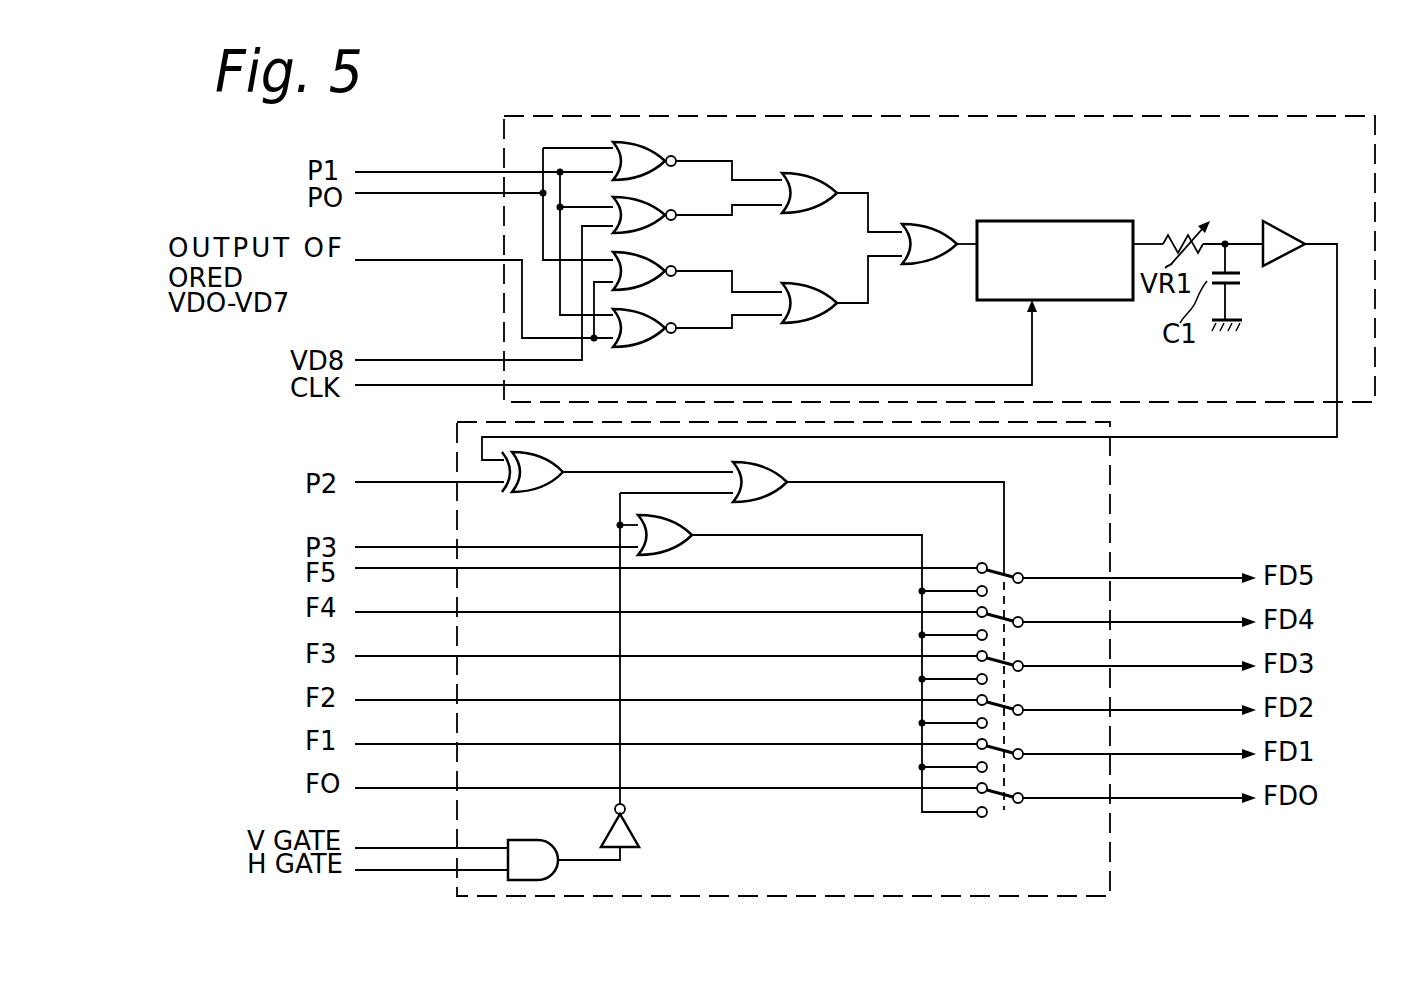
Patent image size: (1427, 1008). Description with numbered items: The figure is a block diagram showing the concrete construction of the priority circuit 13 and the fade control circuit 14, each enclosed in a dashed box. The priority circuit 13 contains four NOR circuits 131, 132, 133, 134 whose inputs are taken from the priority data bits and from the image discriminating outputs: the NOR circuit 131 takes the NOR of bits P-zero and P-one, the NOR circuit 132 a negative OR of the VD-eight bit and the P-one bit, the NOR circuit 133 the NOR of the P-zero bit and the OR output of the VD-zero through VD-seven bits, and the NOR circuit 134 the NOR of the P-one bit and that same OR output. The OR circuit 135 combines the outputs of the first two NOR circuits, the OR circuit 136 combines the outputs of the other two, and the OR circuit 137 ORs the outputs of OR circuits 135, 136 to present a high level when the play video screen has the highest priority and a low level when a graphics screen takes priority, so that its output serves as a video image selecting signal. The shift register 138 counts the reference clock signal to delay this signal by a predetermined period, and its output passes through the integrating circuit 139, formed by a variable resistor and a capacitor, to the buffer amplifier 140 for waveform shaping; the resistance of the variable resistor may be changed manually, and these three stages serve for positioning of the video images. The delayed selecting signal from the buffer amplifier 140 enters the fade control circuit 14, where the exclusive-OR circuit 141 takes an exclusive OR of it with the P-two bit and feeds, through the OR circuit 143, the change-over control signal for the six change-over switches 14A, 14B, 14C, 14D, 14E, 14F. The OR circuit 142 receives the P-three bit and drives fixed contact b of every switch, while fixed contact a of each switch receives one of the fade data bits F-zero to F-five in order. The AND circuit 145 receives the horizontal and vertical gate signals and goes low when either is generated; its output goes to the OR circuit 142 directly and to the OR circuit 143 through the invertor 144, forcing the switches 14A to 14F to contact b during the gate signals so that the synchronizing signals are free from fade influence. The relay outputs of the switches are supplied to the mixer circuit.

The priority circuit 13 is at (1380, 160).
The NOR circuit 131 is at (659, 143).
The NOR circuit 132 is at (657, 194).
The NOR circuit 133 is at (657, 248).
The NOR circuit 134 is at (654, 346).
The OR circuit 135 is at (813, 173).
The OR circuit 136 is at (810, 283).
The OR circuit 137 is at (940, 225).
The shift register 138 is at (1075, 221).
The integrating circuit 139 is at (1226, 204).
The buffer amplifier 140 is at (1283, 222).
The fade control circuit 14 is at (1112, 548).
The exclusive-OR circuit 141 is at (565, 457).
The OR circuit 142 is at (684, 518).
The OR circuit 143 is at (777, 463).
The invertor 144 is at (630, 826).
The AND circuit 145 is at (541, 824).
The change-over switch 14A is at (1015, 784).
The change-over switch 14B is at (1015, 740).
The change-over switch 14C is at (1015, 696).
The change-over switch 14D is at (1015, 652).
The change-over switch 14E is at (1015, 608).
The change-over switch 14F is at (1017, 568).